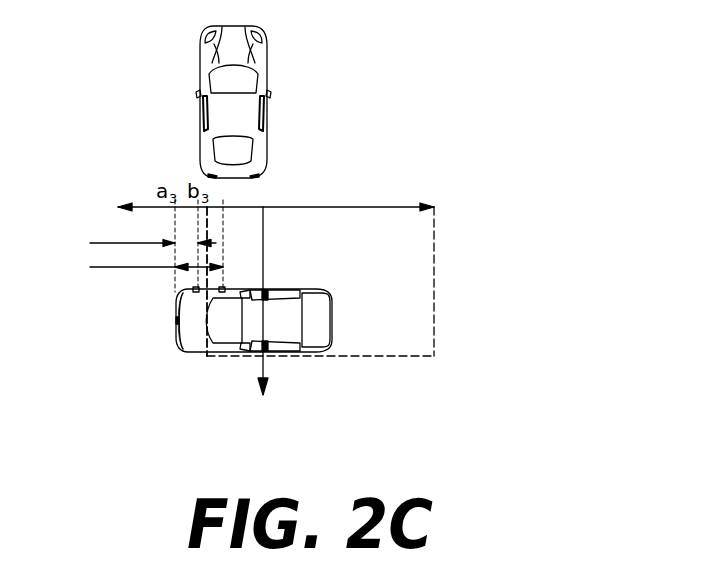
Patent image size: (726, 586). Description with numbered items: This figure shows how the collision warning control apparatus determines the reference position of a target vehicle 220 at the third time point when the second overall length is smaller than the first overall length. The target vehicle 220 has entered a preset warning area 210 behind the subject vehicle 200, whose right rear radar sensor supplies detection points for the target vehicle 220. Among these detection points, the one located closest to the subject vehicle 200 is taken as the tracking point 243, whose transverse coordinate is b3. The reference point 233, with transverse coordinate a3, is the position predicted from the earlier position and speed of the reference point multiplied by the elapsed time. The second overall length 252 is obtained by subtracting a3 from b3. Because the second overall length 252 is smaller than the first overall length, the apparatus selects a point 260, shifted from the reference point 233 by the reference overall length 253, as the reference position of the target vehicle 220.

The subject vehicle 200 is at (268, 83).
The warning area 210 is at (366, 357).
The target vehicle 220 is at (308, 288).
The reference point 233 is at (177, 324).
The tracking point 243 is at (196, 288).
The second overall length 252 is at (90, 243).
The reference overall length 253 is at (90, 267).
The point 260 is at (223, 287).